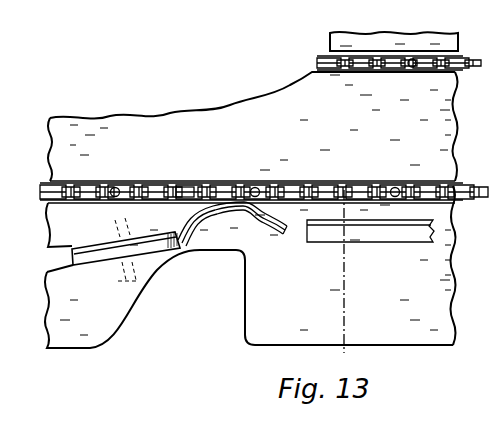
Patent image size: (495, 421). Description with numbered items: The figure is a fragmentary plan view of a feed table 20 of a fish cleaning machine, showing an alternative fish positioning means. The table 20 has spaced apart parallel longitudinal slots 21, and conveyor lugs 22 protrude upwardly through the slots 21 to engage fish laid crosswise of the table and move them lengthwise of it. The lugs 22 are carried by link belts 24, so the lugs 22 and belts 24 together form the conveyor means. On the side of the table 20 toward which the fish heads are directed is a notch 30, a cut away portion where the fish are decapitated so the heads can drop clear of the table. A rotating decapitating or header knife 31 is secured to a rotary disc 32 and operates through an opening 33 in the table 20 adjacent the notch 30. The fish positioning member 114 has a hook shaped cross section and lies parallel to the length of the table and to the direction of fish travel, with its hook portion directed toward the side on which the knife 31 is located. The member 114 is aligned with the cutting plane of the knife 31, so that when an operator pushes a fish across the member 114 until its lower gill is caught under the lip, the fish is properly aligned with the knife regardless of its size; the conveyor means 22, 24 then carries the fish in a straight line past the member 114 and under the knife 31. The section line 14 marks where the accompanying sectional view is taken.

The section line 14- 14 is at (329, 190).
The feed table 20 is at (255, 328).
The longitudinal slot 21 is at (336, 73).
The conveyor lug 22 is at (120, 186).
The link belt 24 is at (184, 186).
The notch 30 is at (240, 312).
The decapitating knife 31 is at (210, 218).
The rotary disc 32 is at (100, 257).
The opening 33 is at (94, 245).
The fish positioning member 114 is at (320, 233).